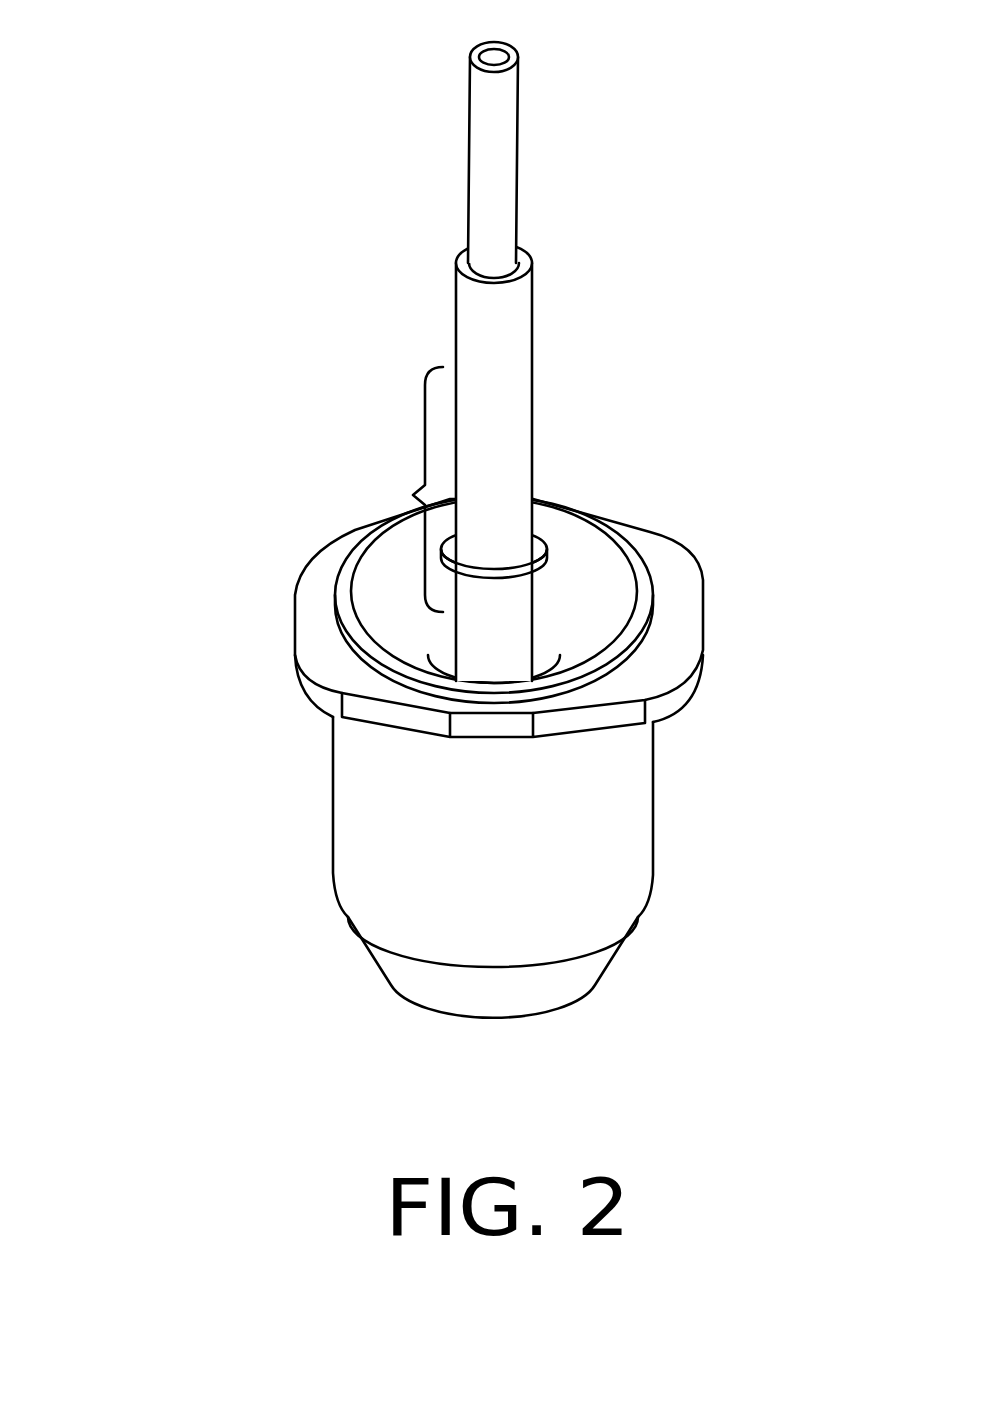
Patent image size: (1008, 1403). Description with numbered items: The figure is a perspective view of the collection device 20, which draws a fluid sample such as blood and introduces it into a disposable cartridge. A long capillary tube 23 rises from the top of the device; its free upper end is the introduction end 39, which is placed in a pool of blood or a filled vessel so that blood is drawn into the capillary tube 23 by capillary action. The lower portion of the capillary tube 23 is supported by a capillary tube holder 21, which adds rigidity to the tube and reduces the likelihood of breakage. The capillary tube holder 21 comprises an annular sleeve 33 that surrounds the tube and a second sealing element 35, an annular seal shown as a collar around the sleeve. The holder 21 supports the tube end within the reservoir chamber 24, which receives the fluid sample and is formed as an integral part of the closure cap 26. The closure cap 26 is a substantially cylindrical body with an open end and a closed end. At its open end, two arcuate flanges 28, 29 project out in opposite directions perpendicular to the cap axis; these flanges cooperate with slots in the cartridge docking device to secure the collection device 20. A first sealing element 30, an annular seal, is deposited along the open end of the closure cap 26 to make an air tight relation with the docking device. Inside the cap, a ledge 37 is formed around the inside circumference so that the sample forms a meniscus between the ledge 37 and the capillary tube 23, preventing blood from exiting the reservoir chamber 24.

The collection device 20 is at (101, 186).
The capillary tube holder 21 is at (398, 489).
The capillary tube 23 is at (498, 202).
The reservoir chamber 24 is at (590, 607).
The closure cap 26 is at (506, 890).
The arcuate flange 28 is at (280, 549).
The arcuate flange 29 is at (728, 636).
The first sealing element 30 is at (613, 503).
The sleeve 33 is at (448, 626).
The second sealing element 35 is at (537, 548).
The ledge 37 is at (435, 662).
The introduction end 39 is at (507, 55).